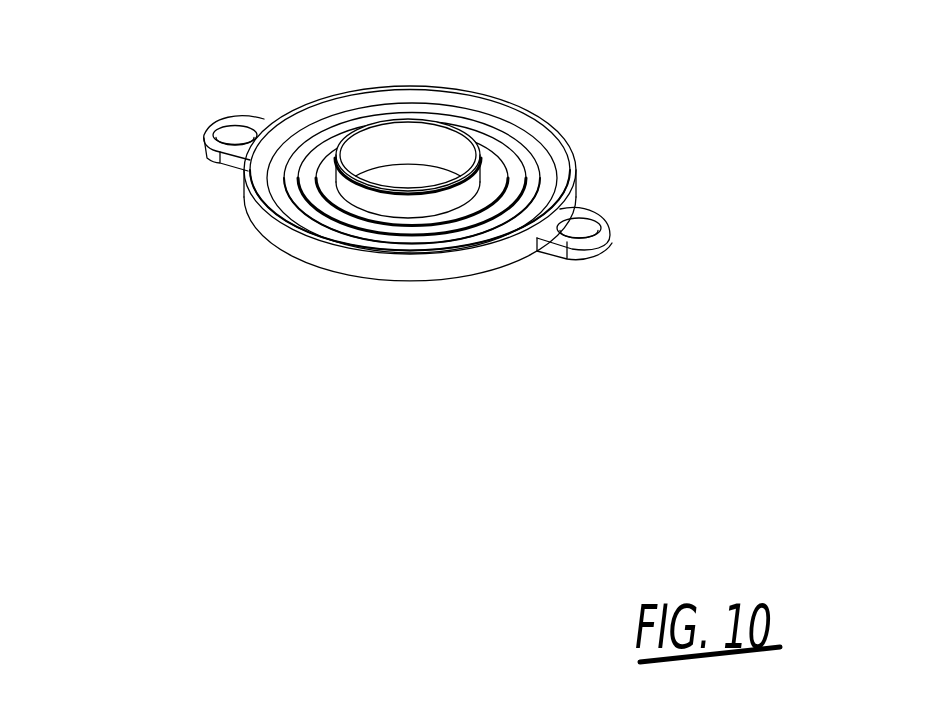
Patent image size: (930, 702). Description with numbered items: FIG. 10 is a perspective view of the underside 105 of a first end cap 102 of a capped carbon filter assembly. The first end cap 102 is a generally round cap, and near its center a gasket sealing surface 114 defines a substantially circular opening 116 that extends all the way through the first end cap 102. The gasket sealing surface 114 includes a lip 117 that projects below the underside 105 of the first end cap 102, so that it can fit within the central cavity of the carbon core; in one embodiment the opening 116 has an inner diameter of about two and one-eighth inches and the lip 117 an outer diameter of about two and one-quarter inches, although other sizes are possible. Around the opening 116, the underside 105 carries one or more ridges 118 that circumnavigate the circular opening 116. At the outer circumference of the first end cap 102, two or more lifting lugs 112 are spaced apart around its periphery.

The first end cap 102 is at (408, 281).
The underside 105 is at (263, 182).
The lifting lugs 112 is at (230, 123).
The gasket sealing surface 114 is at (414, 138).
The circular opening 116 is at (420, 178).
The lip 117 is at (372, 138).
The ridges 118 is at (493, 168).